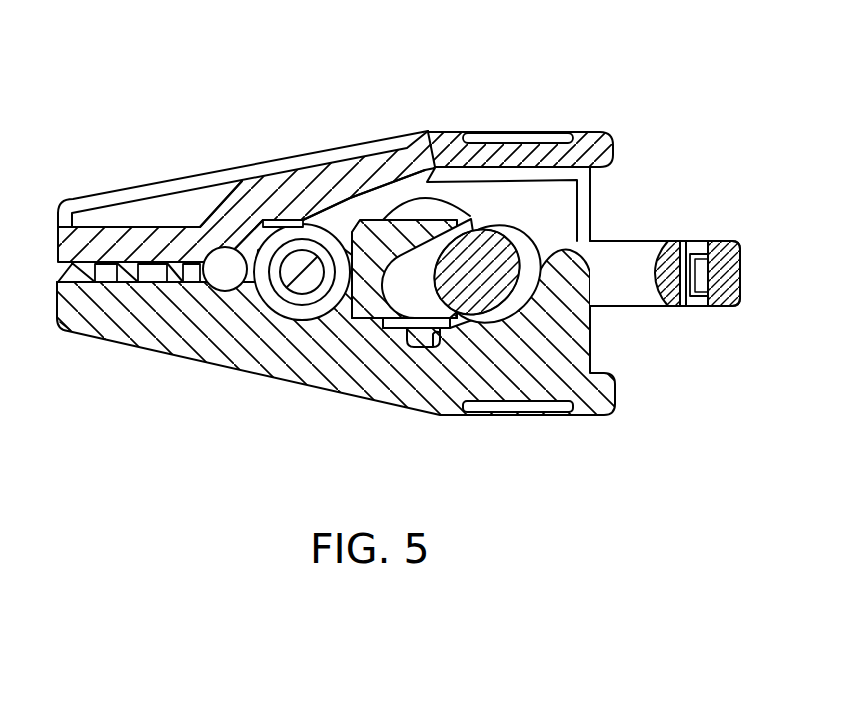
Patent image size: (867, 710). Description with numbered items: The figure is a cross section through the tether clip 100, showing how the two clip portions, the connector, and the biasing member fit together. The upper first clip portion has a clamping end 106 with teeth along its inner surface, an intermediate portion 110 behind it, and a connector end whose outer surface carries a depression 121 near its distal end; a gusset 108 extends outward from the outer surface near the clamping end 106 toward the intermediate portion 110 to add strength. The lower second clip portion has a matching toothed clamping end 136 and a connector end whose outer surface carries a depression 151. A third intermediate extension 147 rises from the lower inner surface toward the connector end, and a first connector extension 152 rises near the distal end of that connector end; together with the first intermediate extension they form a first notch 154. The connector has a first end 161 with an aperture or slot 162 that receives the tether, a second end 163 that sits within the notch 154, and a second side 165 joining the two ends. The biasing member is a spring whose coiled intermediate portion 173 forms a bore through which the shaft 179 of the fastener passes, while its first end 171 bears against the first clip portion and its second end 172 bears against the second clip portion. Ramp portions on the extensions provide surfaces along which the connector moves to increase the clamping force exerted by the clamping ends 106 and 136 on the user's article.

The tether clip 100 is at (286, 40).
The clamping end 106 is at (117, 233).
The gusset 108 is at (175, 213).
The intermediate portion 110 is at (292, 145).
The depression 121 is at (520, 118).
The clamping end 136 is at (117, 322).
The third intermediate extension 147 is at (407, 220).
The depression 151 is at (502, 423).
The first connector extension 152 is at (568, 336).
The first notch 154 is at (440, 335).
The first end 161 is at (725, 257).
The aperture or slot 162 is at (676, 294).
The second end 163 is at (492, 270).
The second side 165 is at (628, 273).
The first end 171 is at (408, 182).
The second end 172 is at (403, 322).
The coiled intermediate portion 173 is at (297, 280).
The shaft 179 is at (300, 288).